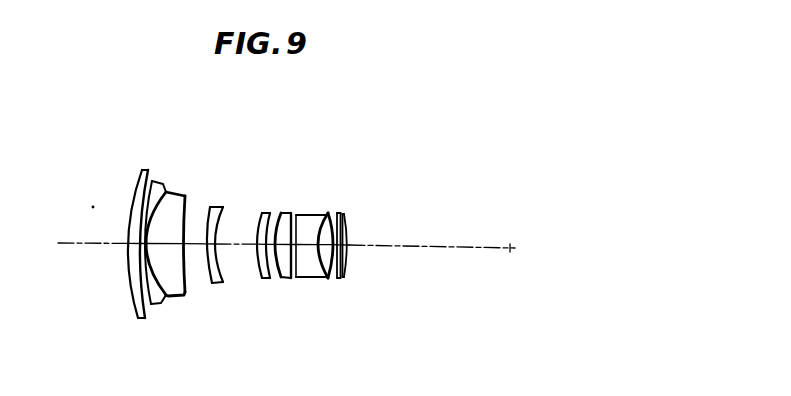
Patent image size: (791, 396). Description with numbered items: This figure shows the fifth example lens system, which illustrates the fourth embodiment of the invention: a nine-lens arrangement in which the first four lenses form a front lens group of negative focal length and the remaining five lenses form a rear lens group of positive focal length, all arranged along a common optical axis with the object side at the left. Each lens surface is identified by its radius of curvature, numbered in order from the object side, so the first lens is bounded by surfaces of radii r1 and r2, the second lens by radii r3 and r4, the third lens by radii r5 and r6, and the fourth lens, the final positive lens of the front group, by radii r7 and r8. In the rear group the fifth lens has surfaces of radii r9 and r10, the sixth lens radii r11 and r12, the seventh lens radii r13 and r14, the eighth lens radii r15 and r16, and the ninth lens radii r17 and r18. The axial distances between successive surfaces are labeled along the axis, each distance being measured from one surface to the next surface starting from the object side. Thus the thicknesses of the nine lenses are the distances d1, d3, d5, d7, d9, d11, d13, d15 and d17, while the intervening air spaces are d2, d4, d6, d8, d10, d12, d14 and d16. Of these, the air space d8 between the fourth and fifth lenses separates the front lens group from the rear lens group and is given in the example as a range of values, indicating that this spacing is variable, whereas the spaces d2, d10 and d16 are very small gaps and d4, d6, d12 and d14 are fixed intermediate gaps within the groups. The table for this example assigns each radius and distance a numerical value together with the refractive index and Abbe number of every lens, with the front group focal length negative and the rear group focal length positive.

The radius of curvature of first lens surface r1 is at (139, 193).
The radius of curvature of second lens surface r2 is at (146, 190).
The radius of curvature of third lens surface r3 is at (155, 181).
The radius of curvature of fourth lens surface r4 is at (167, 191).
The radius of curvature of fifth lens surface r5 is at (185, 196).
The radius of curvature of sixth lens surface r6 is at (209, 207).
The radius of curvature of seventh lens surface r7 is at (221, 207).
The radius of curvature of eighth lens surface r8 is at (260, 213).
The radius of curvature of ninth lens surface r9 is at (268, 213).
The radius of curvature of tenth lens surface r10 is at (281, 213).
The radius of curvature of eleventh lens surface r11 is at (291, 212).
The radius of curvature of twelfth lens surface r12 is at (297, 214).
The radius of curvature of thirteenth lens surface r13 is at (322, 214).
The radius of curvature of fourteenth lens surface r14 is at (330, 214).
The radius of curvature of fifteenth lens surface r15 is at (340, 214).
The radius of curvature of sixteenth lens surface r16 is at (346, 225).
The radius of curvature of seventeenth lens surface r17 is at (347, 229).
The radius of curvature of eighteenth lens surface r18 is at (348, 236).
The axial distance between first and second surfaces d1 is at (137, 246).
The axial distance between second and third surfaces d2 is at (143, 247).
The axial distance between third and fourth surfaces d3 is at (147, 250).
The axial distance between fourth and fifth surfaces d4 is at (163, 257).
The axial distance between fifth and sixth surfaces d5 is at (188, 250).
The axial distance between sixth and seventh surfaces d6 is at (206, 242).
The axial distance between seventh and eighth surfaces d7 is at (209, 265).
The axial distance between eighth and ninth surfaces d8 is at (238, 252).
The axial distance between ninth and tenth surfaces d9 is at (252, 241).
The axial distance between tenth and eleventh surfaces d10 is at (263, 279).
The axial distance between eleventh and twelfth surfaces d11 is at (272, 278).
The axial distance between twelfth and thirteenth surfaces d12 is at (300, 278).
The axial distance between thirteenth and fourteenth surfaces d13 is at (311, 278).
The axial distance between fourteenth and fifteenth surfaces d14 is at (331, 280).
The axial distance between fifteenth and sixteenth surfaces d15 is at (343, 285).
The axial distance between sixteenth and seventeenth surfaces d16 is at (346, 272).
The axial distance between seventeenth and eighteenth surfaces d17 is at (347, 256).